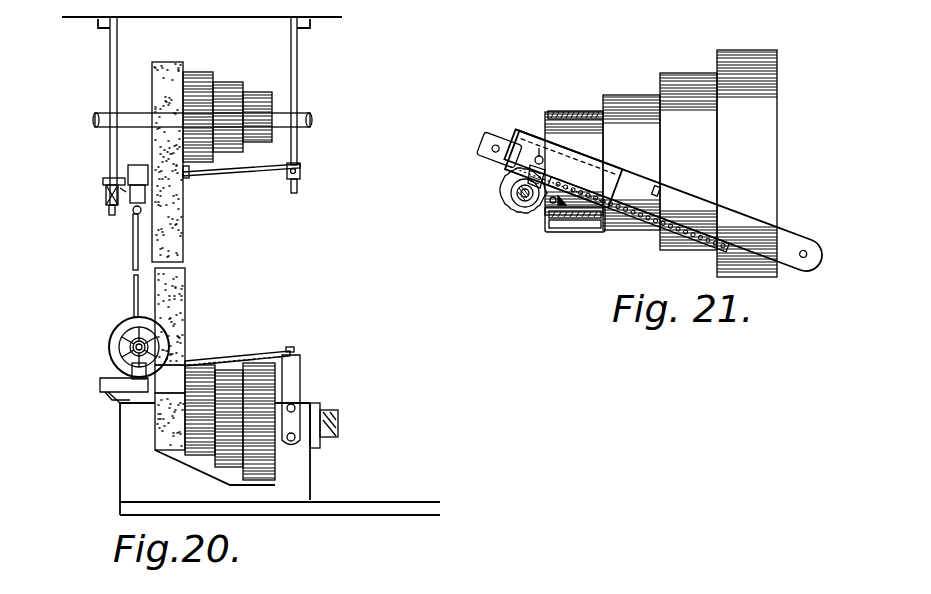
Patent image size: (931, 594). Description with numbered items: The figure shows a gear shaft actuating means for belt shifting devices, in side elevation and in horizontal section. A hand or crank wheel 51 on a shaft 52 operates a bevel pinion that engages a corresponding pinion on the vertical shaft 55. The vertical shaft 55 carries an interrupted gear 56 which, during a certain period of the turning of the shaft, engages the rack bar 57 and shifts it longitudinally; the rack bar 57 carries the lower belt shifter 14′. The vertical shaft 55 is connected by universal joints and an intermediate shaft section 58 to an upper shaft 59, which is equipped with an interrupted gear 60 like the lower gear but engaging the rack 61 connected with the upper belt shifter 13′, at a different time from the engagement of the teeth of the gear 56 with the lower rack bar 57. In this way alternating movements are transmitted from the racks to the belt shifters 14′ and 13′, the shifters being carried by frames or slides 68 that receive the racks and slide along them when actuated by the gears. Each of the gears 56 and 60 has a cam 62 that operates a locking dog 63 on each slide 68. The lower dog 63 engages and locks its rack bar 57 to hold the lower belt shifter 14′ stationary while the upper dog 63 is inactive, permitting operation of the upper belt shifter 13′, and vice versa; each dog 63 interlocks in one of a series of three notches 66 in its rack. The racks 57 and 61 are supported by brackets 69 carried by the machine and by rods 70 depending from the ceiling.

In FIG. 20, the rods 70 is at (110, 93).
In FIG. 20, the upper belt shifter 13′ is at (186, 185).
In FIG. 20, the lower belt shifter 14′ is at (180, 368).
In FIG. 20, the rack 61 is at (258, 172).
In FIG. 21, the rack 61 is at (636, 282).
In FIG. 20, the cam 62 is at (110, 178).
In FIG. 21, the cam 62 is at (547, 224).
In FIG. 20, the interrupted gear 60 is at (129, 168).
In FIG. 20, the upper shaft 59 is at (124, 192).
In FIG. 20, the intermediate shaft section 58 is at (133, 250).
In FIG. 20, the hand or crank wheel 51 is at (167, 345).
In FIG. 20, the shaft 52 is at (134, 345).
In FIG. 20, the frames or slides 68 is at (100, 378).
In FIG. 21, the frames or slides 68 is at (586, 158).
In FIG. 20, the brackets 69 is at (300, 383).
In FIG. 21, the locking dog 63 is at (536, 156).
In FIG. 21, the interrupted gear 56 is at (503, 190).
In FIG. 21, the vertical shaft 55 is at (522, 203).
In FIG. 21, the notches 66 is at (680, 179).
In FIG. 21, the rack bar 57 is at (651, 200).